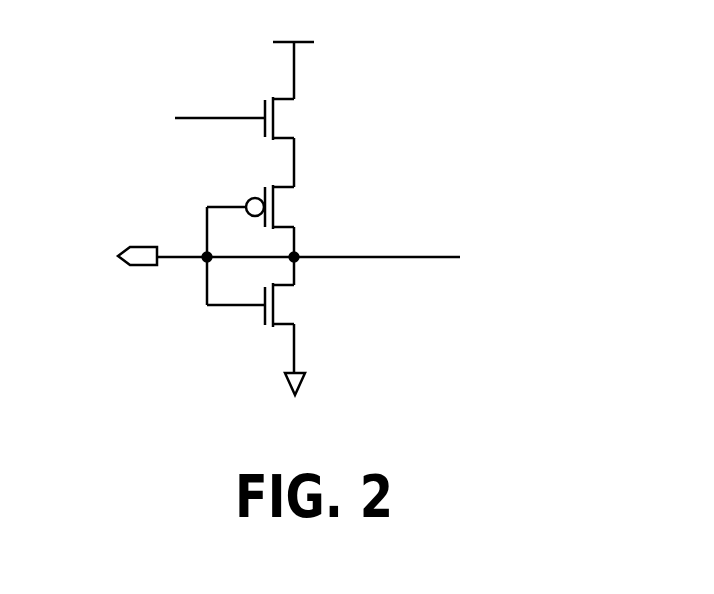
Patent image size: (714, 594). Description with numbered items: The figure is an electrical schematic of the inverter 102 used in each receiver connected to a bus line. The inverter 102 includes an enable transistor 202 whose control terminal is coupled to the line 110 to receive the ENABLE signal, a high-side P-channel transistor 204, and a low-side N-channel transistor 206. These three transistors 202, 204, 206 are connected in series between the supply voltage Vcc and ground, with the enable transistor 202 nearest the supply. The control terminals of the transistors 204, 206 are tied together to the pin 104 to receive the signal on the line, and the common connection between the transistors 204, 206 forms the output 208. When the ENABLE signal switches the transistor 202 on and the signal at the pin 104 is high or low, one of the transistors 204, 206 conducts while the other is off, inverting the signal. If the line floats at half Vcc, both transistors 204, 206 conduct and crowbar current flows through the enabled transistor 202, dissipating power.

The inverter 102 is at (455, 94).
The pin 104 is at (138, 246).
The line 110 is at (217, 118).
The enable transistor 202 is at (296, 119).
The high-side P-channel transistor 204 is at (296, 208).
The low-side N-channel transistor 206 is at (296, 306).
The output line 208 is at (443, 257).